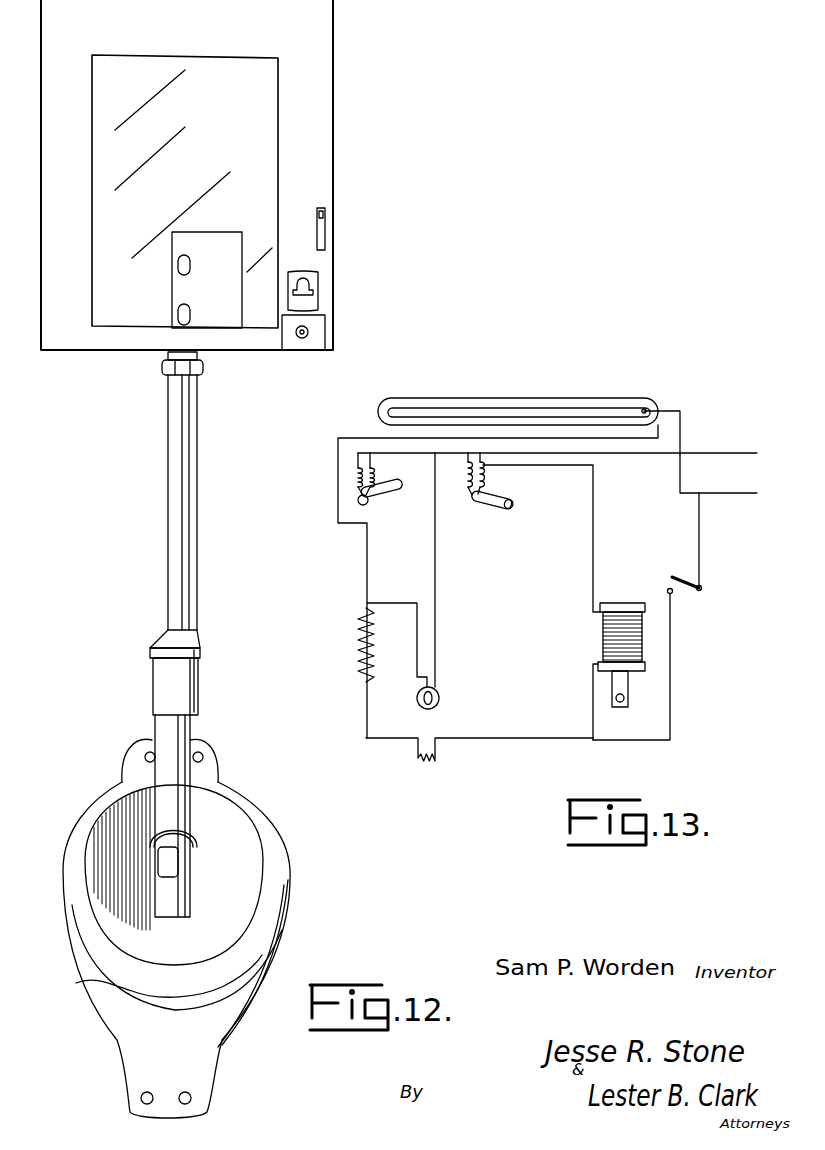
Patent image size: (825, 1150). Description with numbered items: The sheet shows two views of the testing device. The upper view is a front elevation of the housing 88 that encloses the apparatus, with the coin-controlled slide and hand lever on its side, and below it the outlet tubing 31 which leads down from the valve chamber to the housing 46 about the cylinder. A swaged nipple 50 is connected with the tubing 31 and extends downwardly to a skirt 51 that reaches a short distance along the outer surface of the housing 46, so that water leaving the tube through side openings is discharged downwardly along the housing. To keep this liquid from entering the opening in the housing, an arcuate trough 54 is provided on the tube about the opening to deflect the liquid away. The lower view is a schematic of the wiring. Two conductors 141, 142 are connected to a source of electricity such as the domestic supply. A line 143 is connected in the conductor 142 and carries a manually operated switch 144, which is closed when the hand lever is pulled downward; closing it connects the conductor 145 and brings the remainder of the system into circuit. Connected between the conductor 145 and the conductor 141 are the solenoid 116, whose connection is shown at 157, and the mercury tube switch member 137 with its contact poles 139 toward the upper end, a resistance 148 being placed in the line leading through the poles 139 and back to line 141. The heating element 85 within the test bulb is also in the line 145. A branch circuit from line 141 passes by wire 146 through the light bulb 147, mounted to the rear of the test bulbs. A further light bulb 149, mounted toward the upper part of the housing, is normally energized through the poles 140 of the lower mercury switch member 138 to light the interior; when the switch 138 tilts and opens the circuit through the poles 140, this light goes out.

In FIG. 12, the housing 88 is at (322, 145).
In FIG. 12, the tubing 31 is at (183, 433).
In FIG. 12, the swaged nipple 50 is at (191, 641).
In FIG. 12, the skirt 51 is at (199, 688).
In FIG. 12, the housing 46 is at (191, 781).
In FIG. 12, the arcuate trough 54 is at (197, 839).
In FIG. 13, the light bulb 149 is at (585, 405).
In FIG. 13, the conductor 141 is at (760, 451).
In FIG. 13, the conductor 142 is at (757, 493).
In FIG. 13, the contact poles 140 is at (355, 466).
In FIG. 13, the contact poles 139 is at (462, 474).
In FIG. 13, the mercury tube switch member 138 is at (380, 505).
In FIG. 13, the mercury tube switch member 137 is at (496, 510).
In FIG. 13, the wire 146 is at (437, 578).
In FIG. 13, the resistance 148 is at (365, 652).
In FIG. 13, the light bulb 147 is at (440, 697).
In FIG. 13, the heating element 85 is at (436, 762).
In FIG. 13, the connection to solenoid 157 is at (593, 586).
In FIG. 13, the solenoid 116 is at (603, 638).
In FIG. 13, the line 143 is at (700, 582).
In FIG. 13, the manually operated switch 144 is at (689, 592).
In FIG. 13, the conductor 145 is at (672, 682).